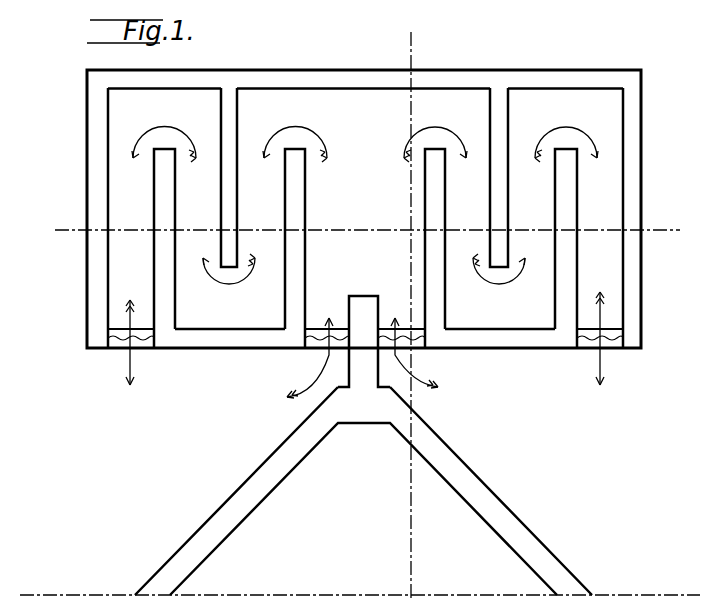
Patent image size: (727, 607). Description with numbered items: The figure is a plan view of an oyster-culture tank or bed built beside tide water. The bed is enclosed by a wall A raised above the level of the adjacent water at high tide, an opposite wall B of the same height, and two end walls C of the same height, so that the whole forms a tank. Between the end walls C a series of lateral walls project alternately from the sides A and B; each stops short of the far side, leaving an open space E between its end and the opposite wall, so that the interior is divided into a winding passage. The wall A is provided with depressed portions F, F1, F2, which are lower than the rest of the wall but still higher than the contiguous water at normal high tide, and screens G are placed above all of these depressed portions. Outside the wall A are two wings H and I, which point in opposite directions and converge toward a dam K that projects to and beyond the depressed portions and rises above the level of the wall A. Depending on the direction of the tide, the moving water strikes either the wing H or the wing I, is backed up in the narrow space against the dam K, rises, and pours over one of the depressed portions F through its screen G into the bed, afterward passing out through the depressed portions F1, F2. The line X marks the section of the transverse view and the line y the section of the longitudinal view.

The wall A is at (232, 349).
The wall B is at (360, 70).
The end walls C is at (93, 207).
The partition walls D is at (223, 213).
The open space E is at (365, 130).
The depressed portions F is at (337, 325).
The depressed portion F1 is at (143, 353).
The depressed portion F2 is at (612, 352).
The screens G is at (113, 352).
The wing H is at (472, 482).
The wing I is at (283, 452).
The dam K is at (363, 300).
The section line x-x X is at (409, 303).
The section line y- y is at (364, 237).